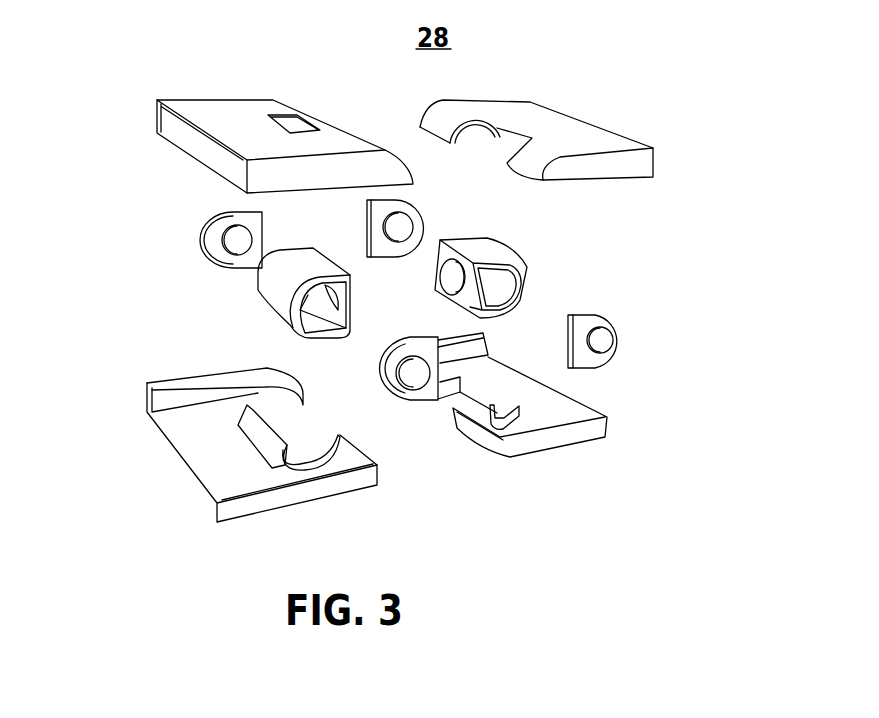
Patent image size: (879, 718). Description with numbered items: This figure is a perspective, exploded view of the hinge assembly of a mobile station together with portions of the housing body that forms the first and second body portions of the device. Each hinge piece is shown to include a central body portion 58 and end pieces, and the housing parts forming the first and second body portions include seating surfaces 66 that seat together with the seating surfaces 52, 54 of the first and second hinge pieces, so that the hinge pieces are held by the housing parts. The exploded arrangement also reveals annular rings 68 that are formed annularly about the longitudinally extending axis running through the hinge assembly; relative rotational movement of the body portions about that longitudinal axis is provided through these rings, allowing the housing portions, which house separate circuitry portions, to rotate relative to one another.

The seating surface 52 is at (413, 403).
The seating surface 54 is at (537, 453).
The central body portion 58 is at (530, 278).
The seating surface 66 is at (315, 492).
The annular ring 68 is at (272, 313).